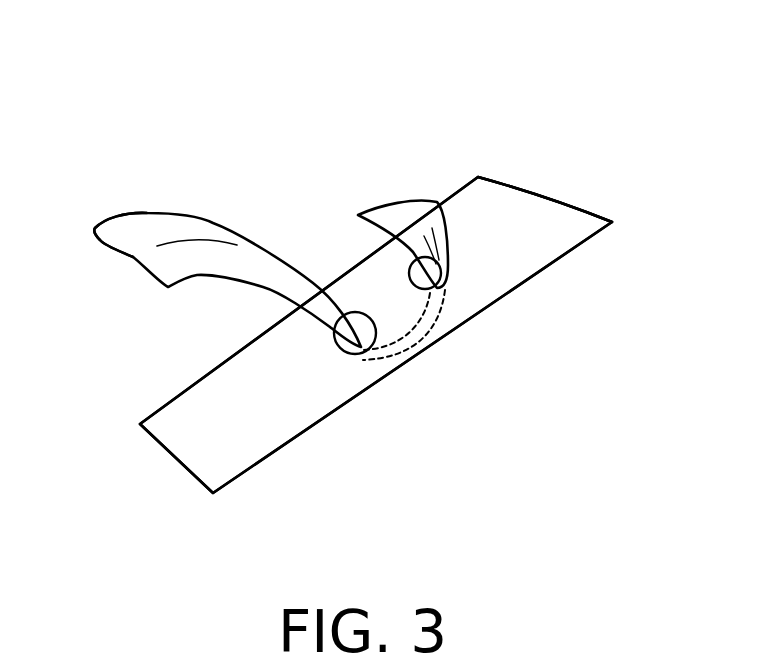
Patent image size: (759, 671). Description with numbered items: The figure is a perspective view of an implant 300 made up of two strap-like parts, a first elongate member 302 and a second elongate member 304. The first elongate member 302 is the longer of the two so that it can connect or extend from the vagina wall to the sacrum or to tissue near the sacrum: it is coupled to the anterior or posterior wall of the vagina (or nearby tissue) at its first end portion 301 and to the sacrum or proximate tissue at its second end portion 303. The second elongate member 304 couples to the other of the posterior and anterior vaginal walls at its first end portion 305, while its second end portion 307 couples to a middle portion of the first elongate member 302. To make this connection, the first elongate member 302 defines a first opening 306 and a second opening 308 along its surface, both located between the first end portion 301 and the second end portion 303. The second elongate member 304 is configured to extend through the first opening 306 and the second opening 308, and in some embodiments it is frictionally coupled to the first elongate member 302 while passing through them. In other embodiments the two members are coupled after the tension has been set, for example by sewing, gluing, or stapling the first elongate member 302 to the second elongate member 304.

The implant 300 is at (240, 85).
The first end portion 301 is at (237, 480).
The first elongate member 302 is at (294, 460).
The second end portion 303 is at (563, 258).
The second elongate member 304 is at (187, 225).
The first end portion 305 is at (113, 216).
The first opening 306 is at (368, 335).
The second end portion 307 is at (418, 208).
The second opening 308 is at (418, 273).